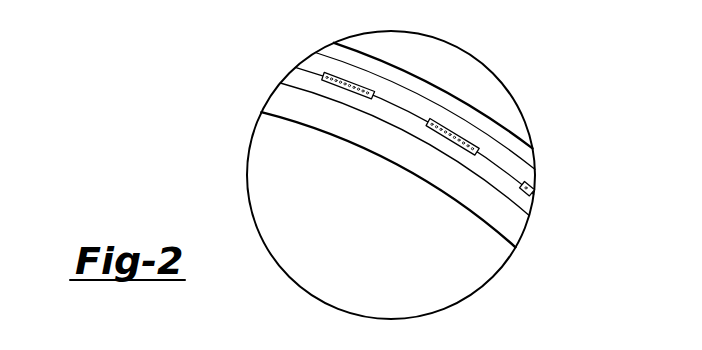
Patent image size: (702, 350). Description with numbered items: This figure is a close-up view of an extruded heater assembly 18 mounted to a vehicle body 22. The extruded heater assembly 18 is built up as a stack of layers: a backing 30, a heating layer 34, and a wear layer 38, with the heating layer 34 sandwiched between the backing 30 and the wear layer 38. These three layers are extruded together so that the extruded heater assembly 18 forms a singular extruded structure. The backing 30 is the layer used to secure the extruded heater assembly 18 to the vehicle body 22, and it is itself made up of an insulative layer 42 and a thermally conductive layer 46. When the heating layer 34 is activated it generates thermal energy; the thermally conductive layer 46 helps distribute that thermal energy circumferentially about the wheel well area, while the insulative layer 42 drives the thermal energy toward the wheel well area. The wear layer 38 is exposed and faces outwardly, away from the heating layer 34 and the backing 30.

The extruded heater assembly 18 is at (321, 36).
The vehicle body 22 is at (446, 62).
The backing 30 is at (541, 147).
The heating layer 34 is at (488, 172).
The wear layer 38 is at (390, 141).
The insulative layer 42 is at (478, 117).
The thermally conductive layer 46 is at (494, 154).